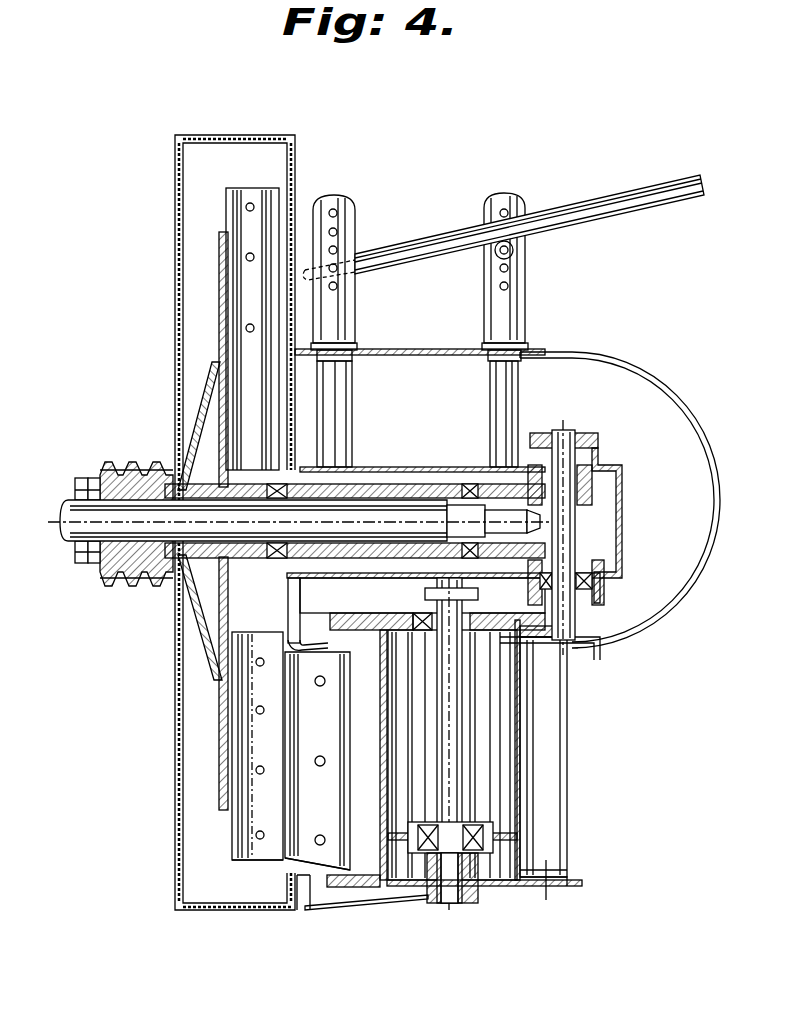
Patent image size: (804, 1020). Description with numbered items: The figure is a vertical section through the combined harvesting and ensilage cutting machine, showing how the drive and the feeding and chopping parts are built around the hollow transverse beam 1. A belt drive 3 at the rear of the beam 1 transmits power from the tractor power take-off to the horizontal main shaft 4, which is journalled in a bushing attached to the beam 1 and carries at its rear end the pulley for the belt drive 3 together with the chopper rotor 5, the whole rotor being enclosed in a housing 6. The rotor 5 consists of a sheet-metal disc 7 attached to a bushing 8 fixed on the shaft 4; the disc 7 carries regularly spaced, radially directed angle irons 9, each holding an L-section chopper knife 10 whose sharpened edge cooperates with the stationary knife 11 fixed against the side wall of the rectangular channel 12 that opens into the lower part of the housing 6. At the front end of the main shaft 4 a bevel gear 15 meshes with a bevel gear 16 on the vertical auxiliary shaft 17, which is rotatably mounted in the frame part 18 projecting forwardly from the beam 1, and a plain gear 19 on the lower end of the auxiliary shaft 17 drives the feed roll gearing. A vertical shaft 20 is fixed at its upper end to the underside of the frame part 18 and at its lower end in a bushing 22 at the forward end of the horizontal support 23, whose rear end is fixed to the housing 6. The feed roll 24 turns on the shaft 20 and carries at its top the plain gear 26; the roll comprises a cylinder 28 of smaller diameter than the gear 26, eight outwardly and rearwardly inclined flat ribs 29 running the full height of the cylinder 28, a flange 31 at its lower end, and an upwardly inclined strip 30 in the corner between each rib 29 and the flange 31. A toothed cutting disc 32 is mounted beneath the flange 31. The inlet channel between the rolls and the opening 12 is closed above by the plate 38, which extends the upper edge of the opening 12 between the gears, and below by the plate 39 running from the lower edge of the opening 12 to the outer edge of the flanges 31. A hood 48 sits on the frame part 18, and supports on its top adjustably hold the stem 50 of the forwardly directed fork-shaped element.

The hollow transverse beam 1 is at (375, 467).
The belt drive 3 is at (121, 460).
The horizontal main shaft 4 is at (120, 580).
The chopper rotor 5 is at (205, 625).
The housing 6 is at (182, 700).
The disc 7 is at (225, 740).
The bushing 8 is at (183, 595).
The angle irons 9 is at (237, 830).
The chopper knife 10 is at (248, 842).
The stationary knife 11 is at (300, 842).
The rectangular channel 12 is at (300, 862).
The bevel gear 15 is at (497, 490).
The bevel gear 16 is at (598, 495).
The vertical auxiliary shaft 17 is at (588, 503).
The frame part 18 is at (622, 530).
The plain gear 19 is at (613, 622).
The vertical shaft 20 is at (462, 798).
The bushings 22 is at (470, 890).
The horizontal support 23 is at (375, 905).
The feed roll 24 is at (577, 752).
The plain gear 26 is at (530, 650).
The cylinder 28 is at (520, 725).
The flat ribs 29 is at (555, 780).
The upwardly inclined strip 30 is at (568, 878).
The flange 31 is at (530, 890).
The cutting disc 32 is at (562, 886).
The plate 38 is at (290, 615).
The plate 39 is at (305, 880).
The hood 48 is at (630, 365).
The stem 50 is at (612, 205).